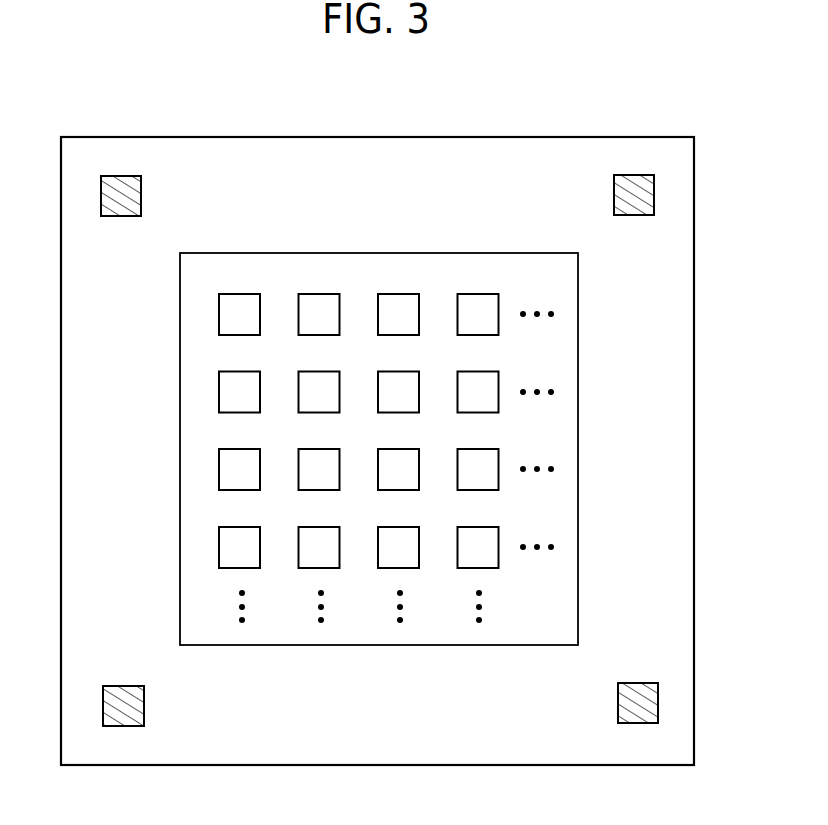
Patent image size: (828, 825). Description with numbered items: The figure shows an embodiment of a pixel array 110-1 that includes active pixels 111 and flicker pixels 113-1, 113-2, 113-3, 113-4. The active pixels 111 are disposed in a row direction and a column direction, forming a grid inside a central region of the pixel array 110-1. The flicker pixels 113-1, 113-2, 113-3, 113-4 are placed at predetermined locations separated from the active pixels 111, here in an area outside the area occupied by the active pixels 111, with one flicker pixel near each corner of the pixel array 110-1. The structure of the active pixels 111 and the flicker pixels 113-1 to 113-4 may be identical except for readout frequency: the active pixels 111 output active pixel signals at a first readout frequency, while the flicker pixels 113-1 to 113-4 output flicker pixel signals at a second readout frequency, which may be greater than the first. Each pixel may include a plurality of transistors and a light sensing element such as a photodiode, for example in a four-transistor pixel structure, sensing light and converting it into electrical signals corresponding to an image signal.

The pixel array 110-1 is at (521, 136).
The active pixels 111 is at (487, 568).
The flicker pixel 113-1 is at (142, 196).
The flicker pixel 113-2 is at (613, 194).
The flicker pixel 113-3 is at (145, 705).
The flicker pixel 113-4 is at (617, 702).